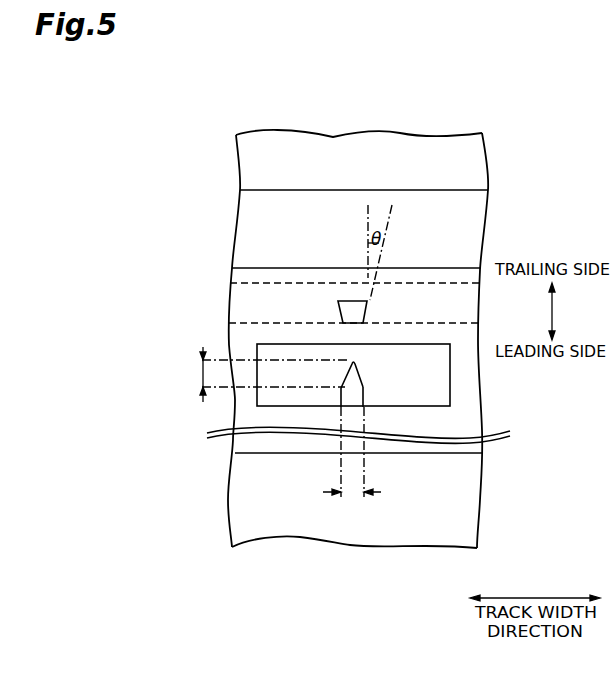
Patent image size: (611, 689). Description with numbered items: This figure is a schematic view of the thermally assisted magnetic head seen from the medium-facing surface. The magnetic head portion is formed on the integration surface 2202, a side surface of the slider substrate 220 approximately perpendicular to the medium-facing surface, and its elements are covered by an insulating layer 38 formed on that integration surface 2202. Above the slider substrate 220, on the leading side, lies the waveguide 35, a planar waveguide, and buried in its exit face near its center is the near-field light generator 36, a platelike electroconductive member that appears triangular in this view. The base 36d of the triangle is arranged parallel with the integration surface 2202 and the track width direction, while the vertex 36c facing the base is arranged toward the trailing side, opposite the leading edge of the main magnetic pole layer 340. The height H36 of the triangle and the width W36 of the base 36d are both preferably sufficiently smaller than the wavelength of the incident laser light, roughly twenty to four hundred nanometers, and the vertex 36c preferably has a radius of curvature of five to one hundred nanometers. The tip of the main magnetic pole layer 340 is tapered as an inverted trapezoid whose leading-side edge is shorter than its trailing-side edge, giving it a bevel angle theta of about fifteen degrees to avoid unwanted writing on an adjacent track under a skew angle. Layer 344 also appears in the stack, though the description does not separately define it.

The insulating layer 38 is at (478, 170).
The upper layer 344 is at (258, 233).
The main magnetic pole layer 340 is at (253, 293).
The waveguide 35 is at (449, 353).
The near-field light generator 36 is at (435, 380).
The vertex 36c is at (352, 357).
The base 36d is at (349, 388).
The height of the triangle H36 is at (255, 374).
The width of the base W36 is at (352, 463).
The integration surface 2202 is at (250, 453).
The slider substrate 220 is at (462, 493).